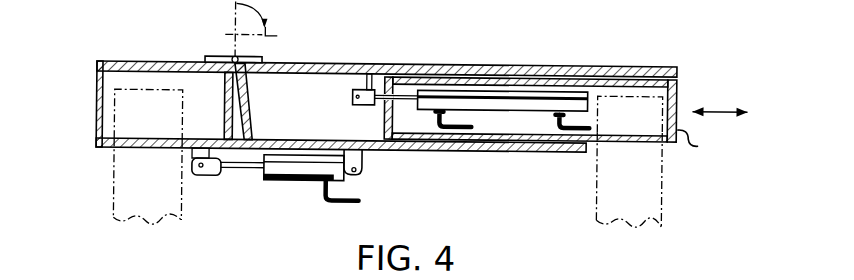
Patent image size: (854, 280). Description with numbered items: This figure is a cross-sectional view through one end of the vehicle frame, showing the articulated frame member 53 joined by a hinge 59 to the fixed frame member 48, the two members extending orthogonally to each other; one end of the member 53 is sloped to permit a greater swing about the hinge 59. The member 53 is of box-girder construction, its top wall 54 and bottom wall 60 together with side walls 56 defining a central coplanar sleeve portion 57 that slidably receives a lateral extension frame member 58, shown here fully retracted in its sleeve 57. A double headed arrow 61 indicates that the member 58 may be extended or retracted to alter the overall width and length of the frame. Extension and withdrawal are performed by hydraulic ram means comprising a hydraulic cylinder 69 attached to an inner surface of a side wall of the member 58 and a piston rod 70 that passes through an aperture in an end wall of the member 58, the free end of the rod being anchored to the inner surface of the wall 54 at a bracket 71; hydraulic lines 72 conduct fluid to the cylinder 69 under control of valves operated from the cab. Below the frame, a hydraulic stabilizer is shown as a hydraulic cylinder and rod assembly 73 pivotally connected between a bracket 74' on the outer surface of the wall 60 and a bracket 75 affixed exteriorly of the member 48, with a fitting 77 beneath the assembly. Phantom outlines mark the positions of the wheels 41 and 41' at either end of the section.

The wheel 41 is at (658, 180).
The frame member 41' is at (114, 180).
The fixed frame member 48 is at (97, 110).
The articulated frame member 53 is at (615, 58).
The top wall 54 is at (452, 61).
The side walls 56 is at (427, 118).
The central coplanar sleeve portion 57 is at (598, 145).
The lateral extension frame member 58 is at (702, 144).
The hinge 59 is at (233, 55).
The bottom wall 60 is at (483, 149).
The double headed arrow 61 is at (719, 104).
The hydraulic cylinder 69 is at (500, 96).
The piston rod 70 is at (422, 62).
The bracket 71 is at (359, 75).
The hydraulic lines 72 is at (558, 124).
The hydraulic cylinder and rod assembly 73 is at (287, 183).
The pivot bracket 74' is at (387, 172).
The bracket 75 is at (193, 158).
The hook 77 is at (327, 191).